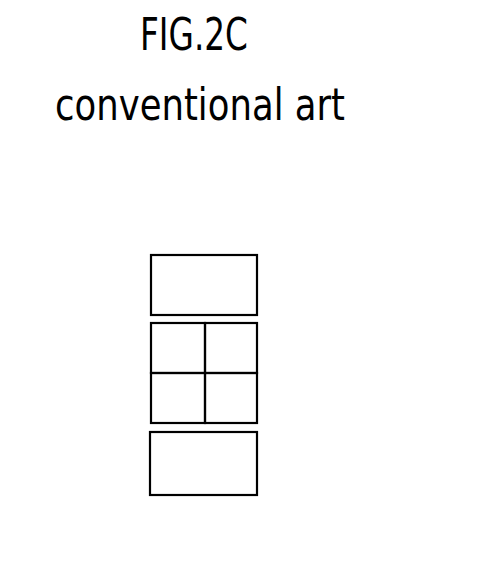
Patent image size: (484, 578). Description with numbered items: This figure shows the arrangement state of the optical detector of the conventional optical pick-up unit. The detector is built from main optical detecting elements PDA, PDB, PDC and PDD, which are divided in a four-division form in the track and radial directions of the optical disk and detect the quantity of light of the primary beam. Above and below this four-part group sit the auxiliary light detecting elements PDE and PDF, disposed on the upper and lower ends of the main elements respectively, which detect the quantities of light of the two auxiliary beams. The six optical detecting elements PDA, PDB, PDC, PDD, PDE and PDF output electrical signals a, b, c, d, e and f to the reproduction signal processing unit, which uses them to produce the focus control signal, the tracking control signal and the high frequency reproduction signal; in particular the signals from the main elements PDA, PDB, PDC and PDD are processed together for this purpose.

The auxiliary light detecting element PDE is at (204, 285).
The main optical detecting element PDA is at (178, 348).
The main optical detecting element PDB is at (231, 348).
The main optical detecting element PDC is at (231, 398).
The main optical detecting element PDD is at (178, 398).
The auxiliary light detecting element PDF is at (203, 463).